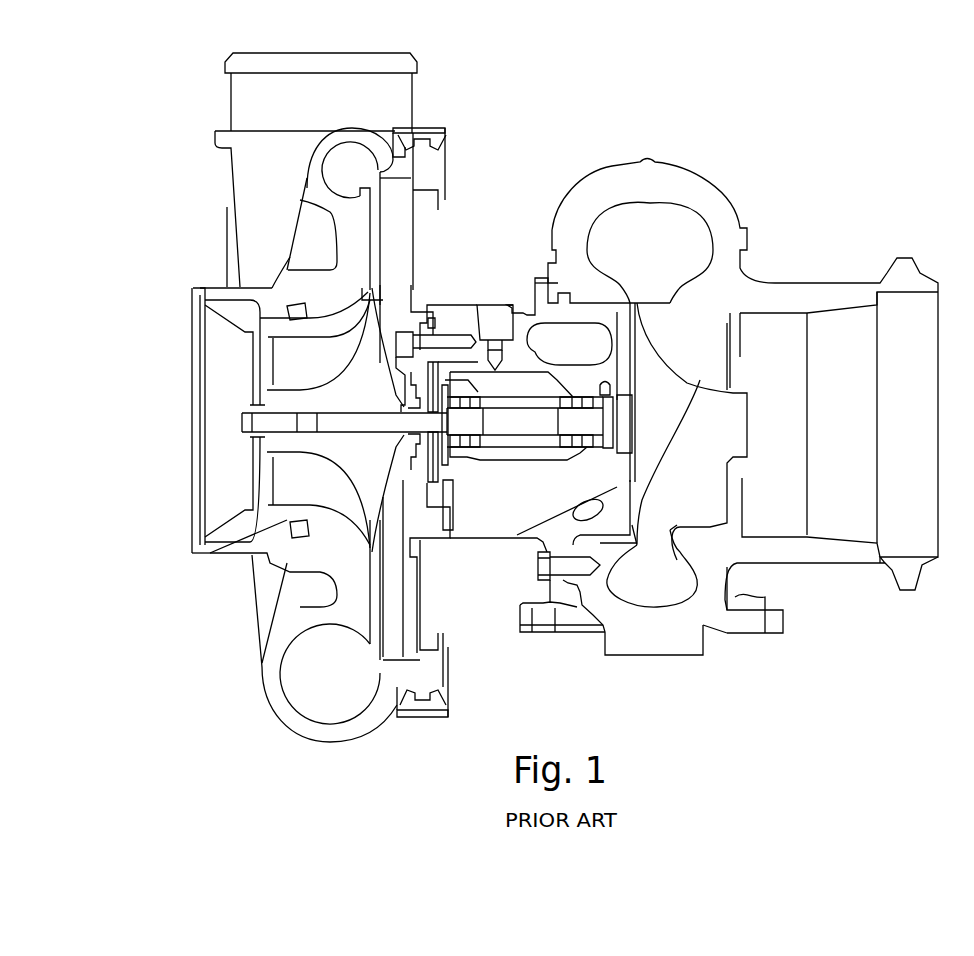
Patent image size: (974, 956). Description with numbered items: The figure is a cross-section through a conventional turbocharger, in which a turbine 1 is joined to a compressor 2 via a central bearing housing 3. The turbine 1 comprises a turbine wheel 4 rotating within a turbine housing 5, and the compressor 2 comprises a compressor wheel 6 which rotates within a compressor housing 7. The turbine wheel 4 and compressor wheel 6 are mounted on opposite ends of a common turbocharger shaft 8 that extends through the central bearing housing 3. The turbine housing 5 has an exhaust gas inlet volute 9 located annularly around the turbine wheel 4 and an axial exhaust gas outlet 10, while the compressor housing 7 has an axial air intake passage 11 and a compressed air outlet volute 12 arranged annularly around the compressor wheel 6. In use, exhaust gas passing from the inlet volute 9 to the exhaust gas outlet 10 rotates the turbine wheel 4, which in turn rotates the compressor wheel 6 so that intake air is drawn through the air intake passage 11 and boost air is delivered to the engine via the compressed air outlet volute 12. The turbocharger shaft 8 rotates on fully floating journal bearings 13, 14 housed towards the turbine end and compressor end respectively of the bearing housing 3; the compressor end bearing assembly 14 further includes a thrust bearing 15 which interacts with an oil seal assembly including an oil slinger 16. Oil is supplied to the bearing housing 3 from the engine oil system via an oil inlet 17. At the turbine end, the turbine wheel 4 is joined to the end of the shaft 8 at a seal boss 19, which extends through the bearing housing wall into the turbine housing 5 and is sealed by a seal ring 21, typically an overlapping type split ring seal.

The turbine 1 is at (863, 241).
The compressor 2 is at (217, 609).
The central bearing housing 3 is at (457, 315).
The turbine wheel 4 is at (658, 472).
The turbine housing 5 is at (861, 557).
The compressor wheel 6 is at (290, 444).
The compressor housing 7 is at (295, 278).
The turbocharger shaft 8 is at (513, 426).
The exhaust gas inlet volute 9 is at (660, 220).
The axial exhaust gas outlet 10 is at (858, 397).
The axial air intake passage 11 is at (213, 386).
The compressed air outlet volute 12 is at (362, 163).
The journal bearing 13 is at (565, 398).
The journal bearing 14 is at (450, 395).
The thrust bearing 15 is at (433, 357).
The oil slinger 16 is at (423, 437).
The oil inlet 17 is at (495, 320).
The seal boss 19 is at (627, 423).
The seal ring 21 is at (632, 462).